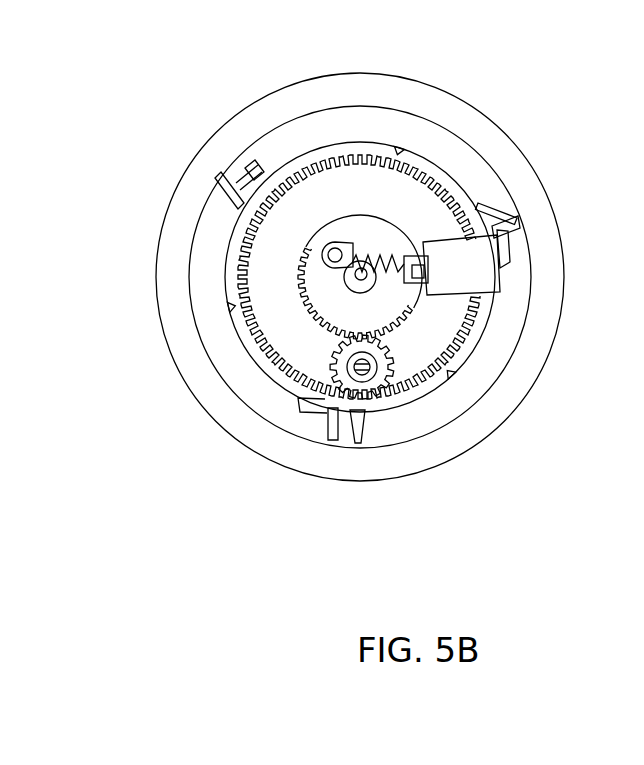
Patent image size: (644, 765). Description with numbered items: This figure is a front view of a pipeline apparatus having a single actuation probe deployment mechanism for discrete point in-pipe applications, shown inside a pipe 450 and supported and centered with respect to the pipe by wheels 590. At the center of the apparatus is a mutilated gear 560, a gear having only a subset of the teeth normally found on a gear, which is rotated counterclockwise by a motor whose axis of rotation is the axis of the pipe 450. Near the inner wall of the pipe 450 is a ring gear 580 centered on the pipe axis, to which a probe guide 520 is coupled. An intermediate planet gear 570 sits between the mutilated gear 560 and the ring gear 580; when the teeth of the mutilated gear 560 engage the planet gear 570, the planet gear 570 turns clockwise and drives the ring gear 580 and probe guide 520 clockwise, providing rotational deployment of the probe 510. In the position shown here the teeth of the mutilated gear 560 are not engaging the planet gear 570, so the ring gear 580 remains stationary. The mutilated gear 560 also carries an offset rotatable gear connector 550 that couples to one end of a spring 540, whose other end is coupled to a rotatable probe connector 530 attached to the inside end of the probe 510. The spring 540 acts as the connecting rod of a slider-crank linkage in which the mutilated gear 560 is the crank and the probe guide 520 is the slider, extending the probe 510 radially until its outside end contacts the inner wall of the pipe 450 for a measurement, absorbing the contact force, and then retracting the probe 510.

The pipe 450 is at (452, 432).
The probe 510 is at (421, 277).
The probe guide 520 is at (470, 278).
The rotatable probe connector 530 is at (421, 279).
The spring 540 is at (383, 253).
The offset rotatable gear connector 550 is at (352, 260).
The mutilated gear 560 is at (343, 223).
The planet gear 570 is at (350, 387).
The ring gear 580 is at (283, 375).
The wheels 590 is at (240, 192).